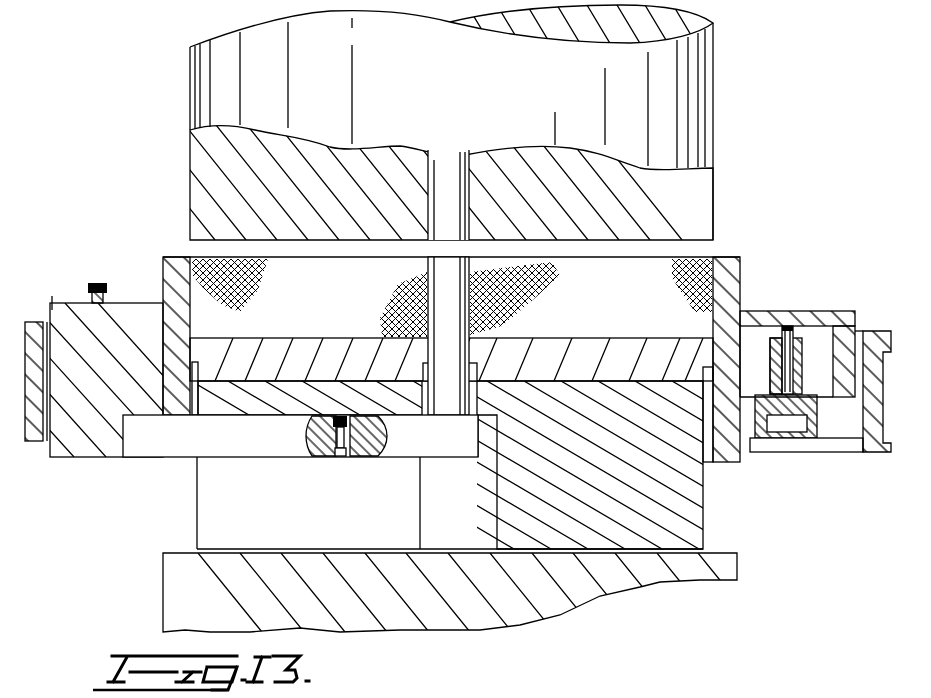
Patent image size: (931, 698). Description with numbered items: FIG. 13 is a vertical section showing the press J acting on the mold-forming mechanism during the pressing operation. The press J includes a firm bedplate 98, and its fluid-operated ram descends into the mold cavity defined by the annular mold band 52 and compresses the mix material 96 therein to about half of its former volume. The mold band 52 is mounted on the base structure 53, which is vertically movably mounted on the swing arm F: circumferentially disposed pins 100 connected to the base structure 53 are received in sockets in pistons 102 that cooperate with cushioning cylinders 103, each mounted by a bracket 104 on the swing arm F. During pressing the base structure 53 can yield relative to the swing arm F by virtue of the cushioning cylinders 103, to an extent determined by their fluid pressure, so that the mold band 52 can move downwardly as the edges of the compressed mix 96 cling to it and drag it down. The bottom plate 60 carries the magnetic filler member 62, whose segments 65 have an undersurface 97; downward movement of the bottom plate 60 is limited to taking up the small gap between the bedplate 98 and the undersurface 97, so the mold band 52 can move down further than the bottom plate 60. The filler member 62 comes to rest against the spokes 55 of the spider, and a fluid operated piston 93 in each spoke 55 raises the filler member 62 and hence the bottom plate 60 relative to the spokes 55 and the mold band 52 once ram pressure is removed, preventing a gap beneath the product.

The press J is at (115, 37).
The base structure 53 is at (60, 310).
The bottom plate 60 is at (217, 350).
The mix material 96 is at (672, 280).
The annular mold band 52 is at (735, 274).
The filler member 62 is at (602, 362).
The spokes 55 is at (252, 441).
The fluid operated piston 93 is at (356, 457).
The segments of the filler member 65 is at (510, 505).
The undersurface of the segments 97 is at (672, 548).
The bedplate 98 is at (715, 565).
The pins 100 is at (797, 379).
The piston 102 is at (772, 386).
The cushioning cylinder 103 is at (745, 447).
The bracket 104 is at (813, 450).
The swing arm F is at (885, 335).